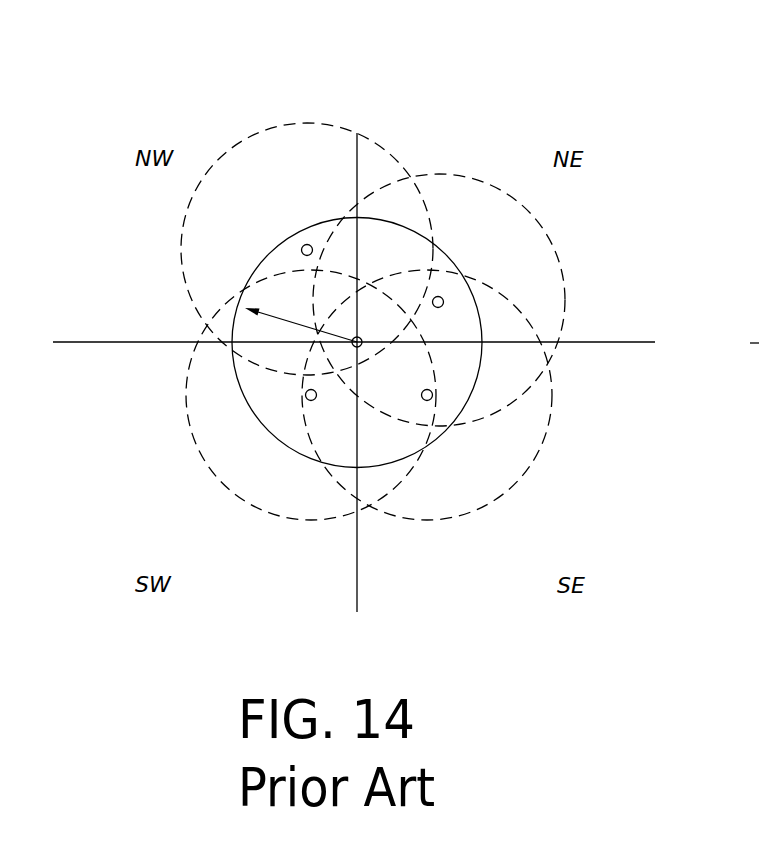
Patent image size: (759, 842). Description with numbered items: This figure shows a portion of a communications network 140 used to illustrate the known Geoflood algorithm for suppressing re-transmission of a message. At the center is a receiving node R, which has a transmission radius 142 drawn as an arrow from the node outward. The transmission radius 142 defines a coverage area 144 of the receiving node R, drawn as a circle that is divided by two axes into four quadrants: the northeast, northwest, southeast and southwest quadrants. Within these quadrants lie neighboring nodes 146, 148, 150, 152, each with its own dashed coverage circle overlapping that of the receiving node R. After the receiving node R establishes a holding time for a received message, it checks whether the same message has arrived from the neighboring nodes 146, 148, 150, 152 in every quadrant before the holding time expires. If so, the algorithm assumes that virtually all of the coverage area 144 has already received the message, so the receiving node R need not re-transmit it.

The communications network 140 is at (369, 86).
The transmission radius 142 is at (280, 318).
The coverage area 144 is at (263, 390).
The neighboring node 146 is at (443, 298).
The neighboring node 148 is at (304, 245).
The neighboring node 150 is at (433, 398).
The neighboring node 152 is at (305, 396).
The receiving node R is at (361, 347).